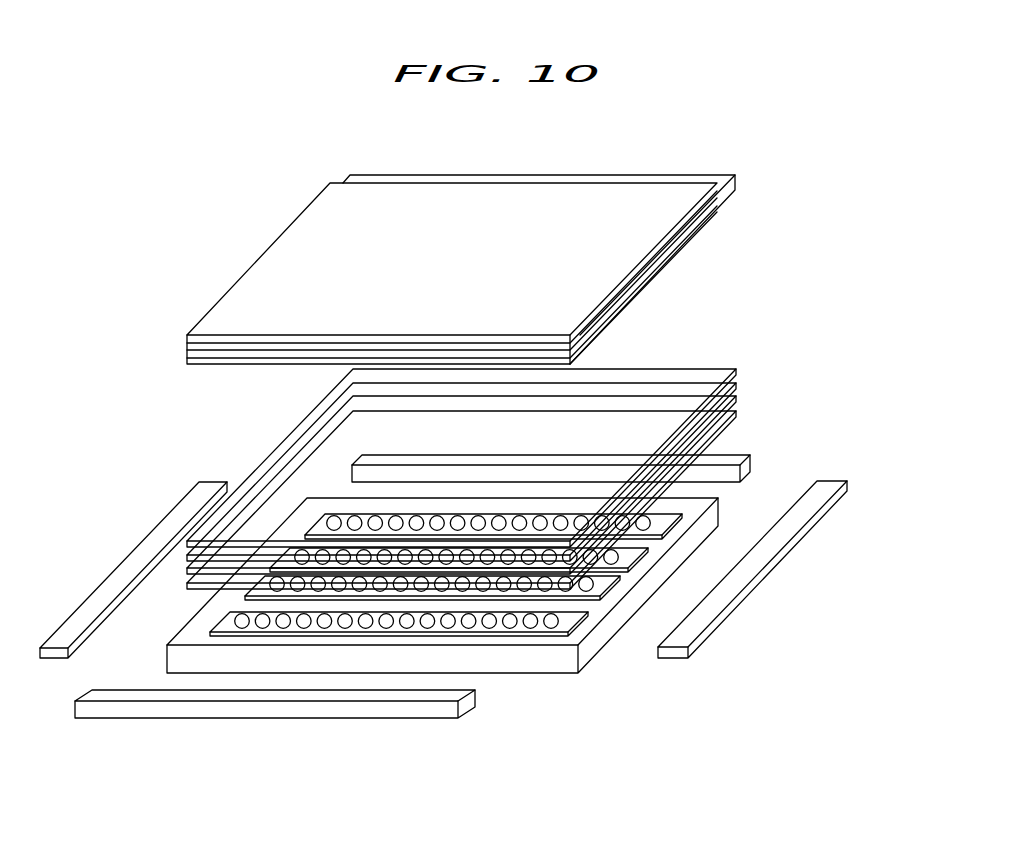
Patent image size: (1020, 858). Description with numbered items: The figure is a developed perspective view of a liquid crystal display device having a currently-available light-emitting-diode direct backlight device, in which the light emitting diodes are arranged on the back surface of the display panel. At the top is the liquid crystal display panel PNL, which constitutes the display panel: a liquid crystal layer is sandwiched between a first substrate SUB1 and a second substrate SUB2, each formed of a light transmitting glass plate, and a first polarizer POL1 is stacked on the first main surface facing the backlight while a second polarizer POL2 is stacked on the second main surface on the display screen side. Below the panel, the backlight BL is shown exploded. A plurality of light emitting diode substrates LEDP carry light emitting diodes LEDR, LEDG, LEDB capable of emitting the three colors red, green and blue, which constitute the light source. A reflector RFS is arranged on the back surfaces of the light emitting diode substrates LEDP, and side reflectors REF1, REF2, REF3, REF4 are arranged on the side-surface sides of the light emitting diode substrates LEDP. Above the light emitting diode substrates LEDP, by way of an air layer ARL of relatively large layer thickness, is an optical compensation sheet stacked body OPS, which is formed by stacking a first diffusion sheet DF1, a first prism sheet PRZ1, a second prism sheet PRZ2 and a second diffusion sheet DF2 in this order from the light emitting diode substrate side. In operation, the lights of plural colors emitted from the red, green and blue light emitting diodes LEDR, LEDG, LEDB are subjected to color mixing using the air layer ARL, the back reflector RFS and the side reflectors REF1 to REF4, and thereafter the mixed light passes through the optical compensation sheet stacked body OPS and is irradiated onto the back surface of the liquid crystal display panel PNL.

The liquid crystal display panel PNL is at (600, 163).
The second polarizer POL2 is at (229, 303).
The first substrate SUB1 is at (187, 345).
The second substrate SUB2 is at (187, 352).
The first polarizer POL1 is at (187, 360).
The optical compensation sheet stacked body OPS is at (823, 315).
The second diffusion sheet DF2 is at (735, 369).
The second prism sheet PRZ2 is at (735, 383).
The first prism sheet PRZ1 is at (735, 396).
The first diffusion sheet DF1 is at (735, 411).
The air layer ARL is at (757, 418).
The side reflector REF1 is at (128, 562).
The side reflector REF2 is at (557, 473).
The side reflector REF3 is at (736, 586).
The side reflector REF4 is at (178, 708).
The backlight unit BL is at (158, 641).
The reflective sheet RFS is at (592, 645).
The light emitting diode substrate LEDP is at (350, 628).
The light emitting diode (blue) LEDB is at (489, 628).
The light emitting diode (red) LEDR is at (469, 628).
The light emitting diode (green) LEDG is at (510, 628).